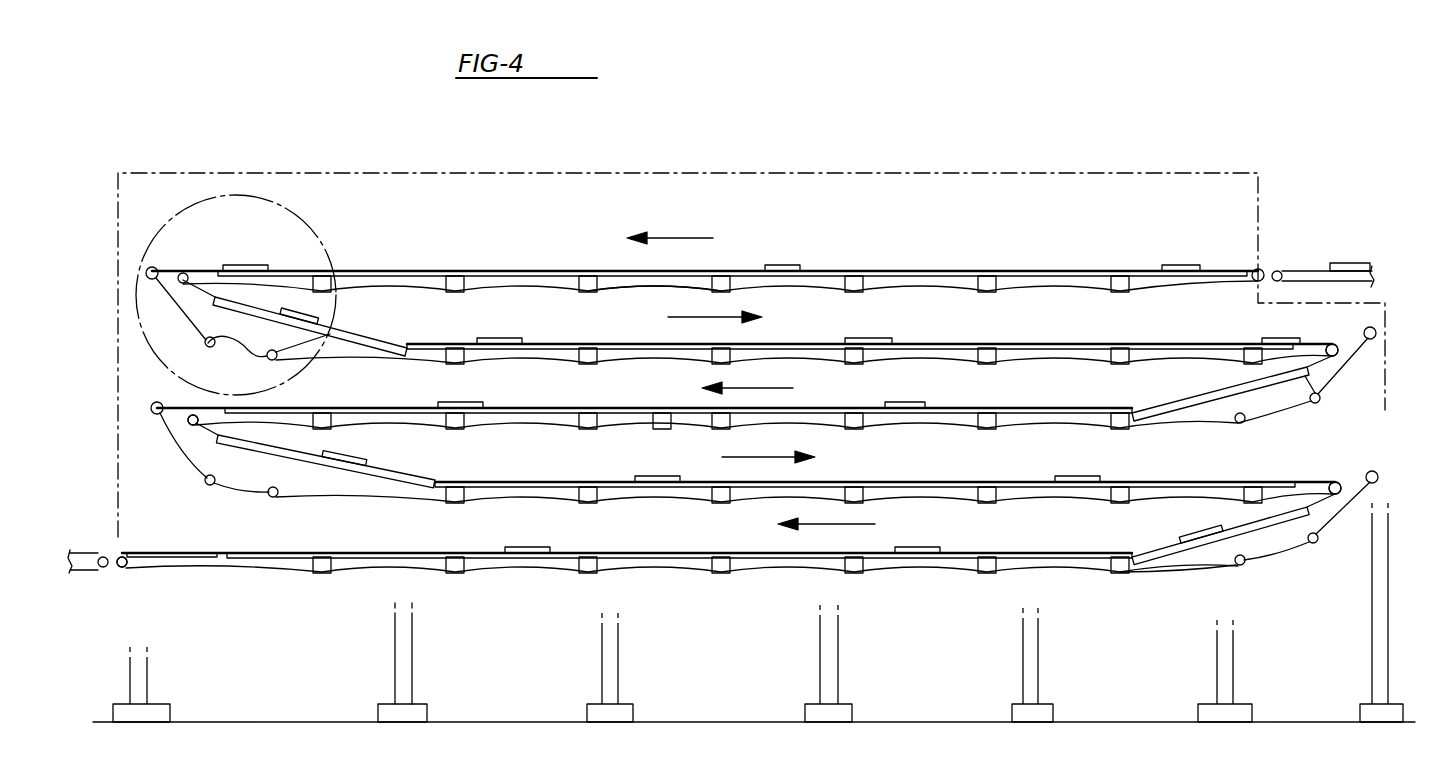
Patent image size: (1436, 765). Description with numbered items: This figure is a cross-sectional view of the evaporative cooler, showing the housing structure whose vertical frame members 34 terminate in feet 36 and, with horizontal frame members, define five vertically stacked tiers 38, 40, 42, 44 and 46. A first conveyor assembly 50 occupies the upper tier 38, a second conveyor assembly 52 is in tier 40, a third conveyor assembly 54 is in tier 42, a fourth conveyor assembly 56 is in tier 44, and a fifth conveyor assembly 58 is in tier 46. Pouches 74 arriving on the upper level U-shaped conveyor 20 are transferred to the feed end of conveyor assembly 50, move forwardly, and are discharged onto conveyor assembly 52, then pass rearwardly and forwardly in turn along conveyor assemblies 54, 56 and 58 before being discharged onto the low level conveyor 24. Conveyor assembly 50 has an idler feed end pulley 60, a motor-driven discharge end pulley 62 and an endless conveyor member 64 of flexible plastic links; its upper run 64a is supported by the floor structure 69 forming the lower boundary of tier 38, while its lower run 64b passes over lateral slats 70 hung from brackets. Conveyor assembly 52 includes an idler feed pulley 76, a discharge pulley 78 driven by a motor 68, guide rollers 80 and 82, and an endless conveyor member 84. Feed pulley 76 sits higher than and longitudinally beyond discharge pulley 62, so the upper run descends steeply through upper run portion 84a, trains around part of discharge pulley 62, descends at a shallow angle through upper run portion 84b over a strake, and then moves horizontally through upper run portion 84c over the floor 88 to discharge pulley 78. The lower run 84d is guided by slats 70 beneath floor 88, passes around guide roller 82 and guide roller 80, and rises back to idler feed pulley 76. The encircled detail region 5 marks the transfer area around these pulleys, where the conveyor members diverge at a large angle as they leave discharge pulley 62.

The detail region of FIG. 5 is at (290, 207).
The U-shaped conveyor 20 is at (1343, 282).
The low level conveyor 24 is at (73, 555).
The vertical frame members 34 is at (400, 682).
The feet 36 is at (423, 718).
The upper tier 38 is at (1118, 248).
The tier 40 is at (1091, 323).
The tier 42 is at (1109, 394).
The tier 44 is at (1153, 466).
The tier 46 is at (1118, 539).
The first conveyor assembly 50 is at (1027, 263).
The second conveyor assembly 52 is at (1113, 333).
The third conveyor assembly 54 is at (983, 400).
The fourth conveyor assembly 56 is at (982, 482).
The fifth conveyor assembly 58 is at (992, 550).
The feed end pulley 60 is at (1257, 270).
The discharge end pulley 62 is at (184, 272).
The endless conveyor member 64 is at (558, 268).
The upper run 64a is at (425, 270).
The lower run 64b is at (645, 292).
The motor 68 is at (1325, 347).
The floor structure 69 is at (910, 267).
The lateral slats 70 is at (582, 293).
The pouches 74 is at (1357, 265).
The idler feed pulley 76 is at (152, 267).
The discharge pulley 78 is at (192, 416).
The guide roller 80 is at (273, 361).
The guide roller 82 is at (330, 340).
The endless conveyor member 84 is at (825, 337).
The upper run portion 84a is at (183, 270).
The upper run portion 84b is at (393, 337).
The upper run portion 84c is at (810, 343).
The lower run 84d is at (662, 366).
The floor 88 is at (968, 340).